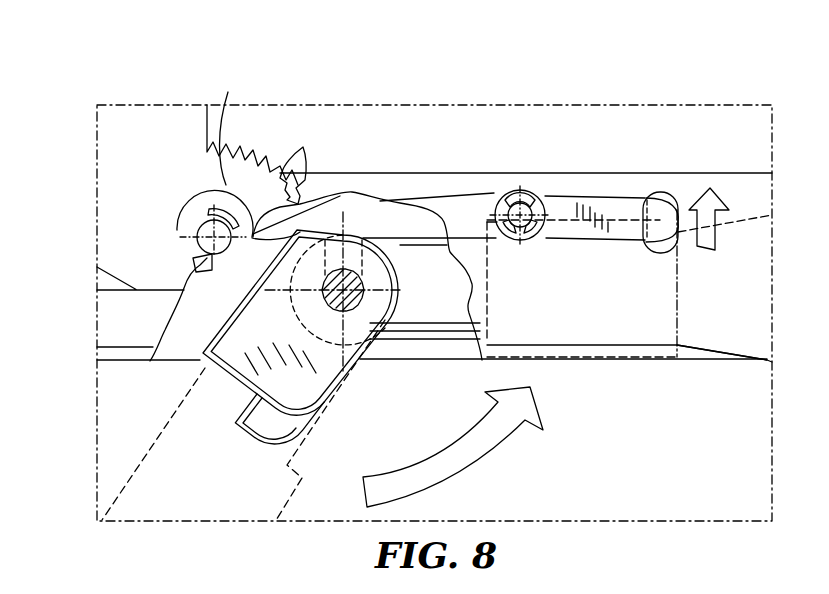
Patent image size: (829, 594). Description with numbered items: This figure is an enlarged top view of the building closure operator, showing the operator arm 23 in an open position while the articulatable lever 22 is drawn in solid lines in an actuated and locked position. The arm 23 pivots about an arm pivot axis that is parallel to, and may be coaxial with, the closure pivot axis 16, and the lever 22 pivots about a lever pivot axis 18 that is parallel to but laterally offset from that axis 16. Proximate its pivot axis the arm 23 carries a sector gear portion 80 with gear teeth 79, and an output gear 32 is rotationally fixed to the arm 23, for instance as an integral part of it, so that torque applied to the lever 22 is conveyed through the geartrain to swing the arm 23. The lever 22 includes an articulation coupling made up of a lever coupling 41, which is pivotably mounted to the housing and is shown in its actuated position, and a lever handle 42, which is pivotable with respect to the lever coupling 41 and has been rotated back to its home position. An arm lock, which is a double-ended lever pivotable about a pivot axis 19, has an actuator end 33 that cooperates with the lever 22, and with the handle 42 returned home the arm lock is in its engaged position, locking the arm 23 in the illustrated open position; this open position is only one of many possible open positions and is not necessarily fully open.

The closure pivot axis 16 is at (204, 245).
The lever pivot axis 18 is at (352, 297).
The pivot axis 19 is at (536, 198).
The articulatable lever 22 is at (766, 359).
The operator arm 23 is at (162, 134).
The output gear 32 is at (241, 158).
The actuator end 33 is at (604, 202).
The lever coupling 41 is at (315, 383).
The lever handle 42 is at (768, 363).
The gear teeth 79 is at (300, 164).
The sector gear portion 80 is at (233, 127).